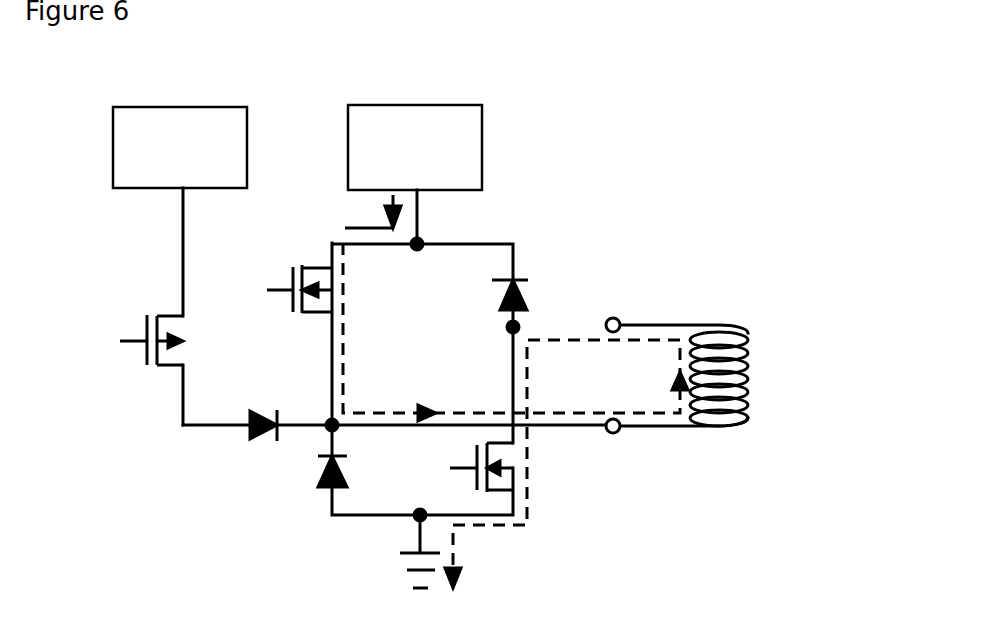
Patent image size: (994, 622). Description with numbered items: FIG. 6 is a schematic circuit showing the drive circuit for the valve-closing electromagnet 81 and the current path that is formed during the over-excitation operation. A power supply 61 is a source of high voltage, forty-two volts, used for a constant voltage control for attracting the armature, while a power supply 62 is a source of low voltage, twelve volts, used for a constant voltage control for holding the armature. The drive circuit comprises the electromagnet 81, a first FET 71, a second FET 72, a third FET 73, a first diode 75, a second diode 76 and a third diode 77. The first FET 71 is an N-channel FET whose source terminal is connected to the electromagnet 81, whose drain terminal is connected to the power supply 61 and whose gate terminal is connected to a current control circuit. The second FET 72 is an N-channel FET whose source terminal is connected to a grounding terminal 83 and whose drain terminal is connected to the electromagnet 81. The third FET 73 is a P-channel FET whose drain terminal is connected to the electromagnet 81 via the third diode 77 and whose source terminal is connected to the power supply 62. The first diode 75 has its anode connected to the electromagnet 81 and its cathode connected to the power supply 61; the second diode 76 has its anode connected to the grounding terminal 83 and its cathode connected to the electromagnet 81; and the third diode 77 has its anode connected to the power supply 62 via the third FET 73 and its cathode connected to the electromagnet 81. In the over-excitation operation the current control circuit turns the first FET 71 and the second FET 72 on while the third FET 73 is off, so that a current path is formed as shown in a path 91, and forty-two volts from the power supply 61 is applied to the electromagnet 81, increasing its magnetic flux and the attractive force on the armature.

The power supply 61 is at (483, 153).
The power supply 62 is at (215, 105).
The first FET 71 is at (313, 262).
The second FET 72 is at (503, 482).
The third FET 73 is at (145, 350).
The first diode 75 is at (523, 300).
The second diode 76 is at (325, 463).
The third diode 77 is at (257, 440).
The valve-closing electromagnet 81 is at (755, 342).
The grounding terminal 83 is at (417, 518).
The path 91 is at (635, 342).